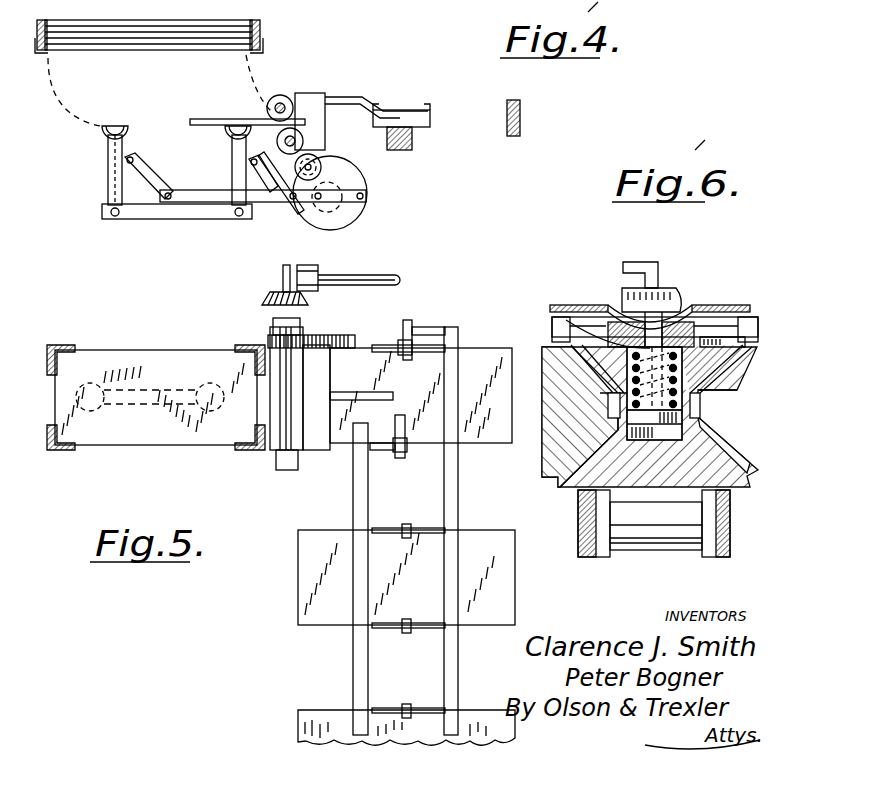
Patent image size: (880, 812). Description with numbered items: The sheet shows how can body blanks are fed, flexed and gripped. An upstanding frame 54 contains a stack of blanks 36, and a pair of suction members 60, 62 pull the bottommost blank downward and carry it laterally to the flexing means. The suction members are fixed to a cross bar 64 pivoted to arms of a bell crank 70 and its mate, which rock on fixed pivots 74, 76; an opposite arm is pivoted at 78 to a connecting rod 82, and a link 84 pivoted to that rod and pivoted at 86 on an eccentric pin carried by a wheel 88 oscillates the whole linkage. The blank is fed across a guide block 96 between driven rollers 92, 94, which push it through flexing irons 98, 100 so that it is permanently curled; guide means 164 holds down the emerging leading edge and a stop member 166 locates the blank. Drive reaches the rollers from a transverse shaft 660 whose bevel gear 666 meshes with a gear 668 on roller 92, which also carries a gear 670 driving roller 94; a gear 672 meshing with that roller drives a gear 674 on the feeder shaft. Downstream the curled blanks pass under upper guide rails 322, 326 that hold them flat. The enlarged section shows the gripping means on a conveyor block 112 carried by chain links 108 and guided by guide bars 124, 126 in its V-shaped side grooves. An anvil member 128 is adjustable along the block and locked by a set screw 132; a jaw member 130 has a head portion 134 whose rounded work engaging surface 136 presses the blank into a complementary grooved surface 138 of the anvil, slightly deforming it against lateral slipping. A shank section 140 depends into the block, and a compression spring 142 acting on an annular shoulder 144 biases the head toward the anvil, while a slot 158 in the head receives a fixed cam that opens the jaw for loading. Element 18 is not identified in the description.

In FIG. 4, the roller 18 is at (149, 26).
In FIG. 4, the upstanding frame 54 is at (150, 63).
In FIG. 5, the upstanding frame 54 is at (60, 343).
In FIG. 4, the blank 36 is at (203, 119).
In FIG. 5, the blank 36 is at (142, 365).
In FIG. 6, the blank 36 is at (565, 305).
In FIG. 4, the fixed pivot 74 is at (126, 130).
In FIG. 4, the suction member 60 is at (110, 135).
In FIG. 5, the suction member 60 is at (97, 411).
In FIG. 4, the suction member 62 is at (232, 132).
In FIG. 5, the suction member 62 is at (208, 411).
In FIG. 4, the bell crank 70 is at (122, 190).
In FIG. 4, the cross bar 64 is at (145, 215).
In FIG. 4, the connecting rod 82 is at (200, 202).
In FIG. 4, the fixed pivot 76 is at (272, 205).
In FIG. 4, the pivot 78 is at (290, 215).
In FIG. 4, the driven roller 94 is at (262, 143).
In FIG. 4, the guide block 96 is at (266, 165).
In FIG. 4, the driven roller 92 is at (283, 95).
In FIG. 5, the driven roller 92 is at (288, 440).
In FIG. 4, the flexing iron 98 is at (305, 95).
In FIG. 5, the flexing iron 98 is at (320, 375).
In FIG. 4, the guide means 164 is at (350, 100).
In FIG. 4, the flexing iron 100 is at (300, 152).
In FIG. 4, the link 84 is at (340, 215).
In FIG. 4, the wheel 88 is at (362, 212).
In FIG. 4, the pivot 86 is at (368, 200).
In FIG. 4, the stop member 166 is at (522, 118).
In FIG. 5, the bevel gear 666 is at (297, 276).
In FIG. 5, the gear 668 is at (285, 300).
In FIG. 5, the gear 670 is at (276, 330).
In FIG. 5, the gear 672 is at (310, 336).
In FIG. 5, the gear 674 is at (335, 340).
In FIG. 5, the shaft 660 is at (385, 277).
In FIG. 5, the upper guide rail 322 is at (354, 500).
In FIG. 5, the upper guide rail 326 is at (450, 652).
In FIG. 6, the compression spring 142 is at (612, 395).
In FIG. 6, the shank section 140 is at (690, 400).
In FIG. 6, the annular shoulder 144 is at (796, 431).
In FIG. 6, the grooved surface 138 is at (587, 312).
In FIG. 6, the jaw member 130 is at (660, 260).
In FIG. 6, the slot 158 is at (628, 278).
In FIG. 6, the work engaging surface 136 is at (680, 300).
In FIG. 6, the head portion 134 is at (665, 298).
In FIG. 6, the guide bar 124 is at (560, 348).
In FIG. 6, the anvil member 128 is at (480, 260).
In FIG. 6, the set screw 132 is at (725, 320).
In FIG. 6, the guide bar 126 is at (762, 360).
In FIG. 6, the block 112 is at (748, 478).
In FIG. 6, the link 108 is at (722, 522).